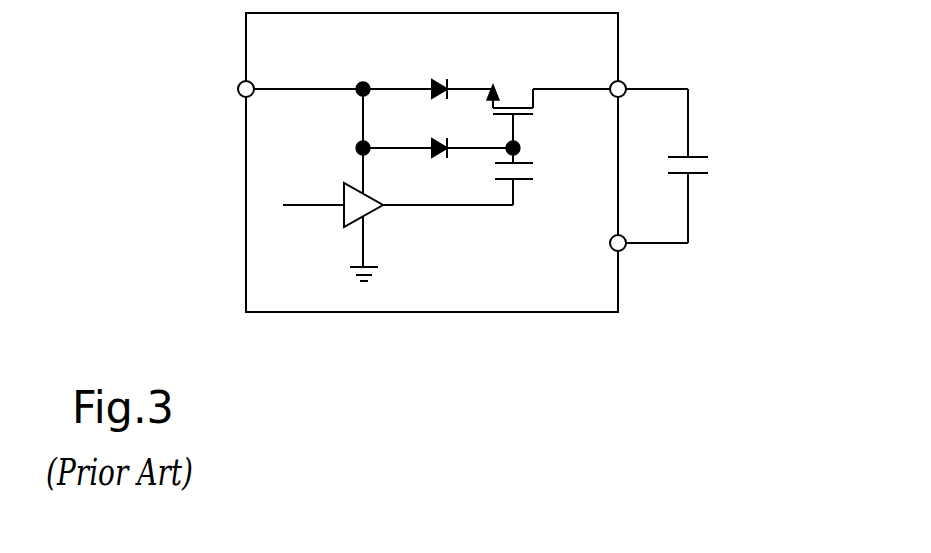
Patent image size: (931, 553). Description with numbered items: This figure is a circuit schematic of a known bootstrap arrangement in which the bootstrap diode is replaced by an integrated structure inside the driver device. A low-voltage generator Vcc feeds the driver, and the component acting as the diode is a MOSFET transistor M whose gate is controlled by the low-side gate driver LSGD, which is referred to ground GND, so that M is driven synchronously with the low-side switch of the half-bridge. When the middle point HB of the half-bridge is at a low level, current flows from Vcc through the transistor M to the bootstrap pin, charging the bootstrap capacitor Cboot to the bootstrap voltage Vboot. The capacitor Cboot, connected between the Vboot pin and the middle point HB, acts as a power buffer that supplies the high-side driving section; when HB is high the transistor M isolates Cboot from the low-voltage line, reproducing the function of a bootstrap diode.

The low-voltage generator Vcc is at (217, 77).
The bootstrap voltage Vboot is at (619, 72).
The bootstrap capacitor Cboot is at (707, 166).
The MOSFET transistor M is at (527, 124).
The low-side gate driver LSGD is at (320, 201).
The ground GND is at (381, 287).
The middle point of the half-bridge HB is at (638, 260).